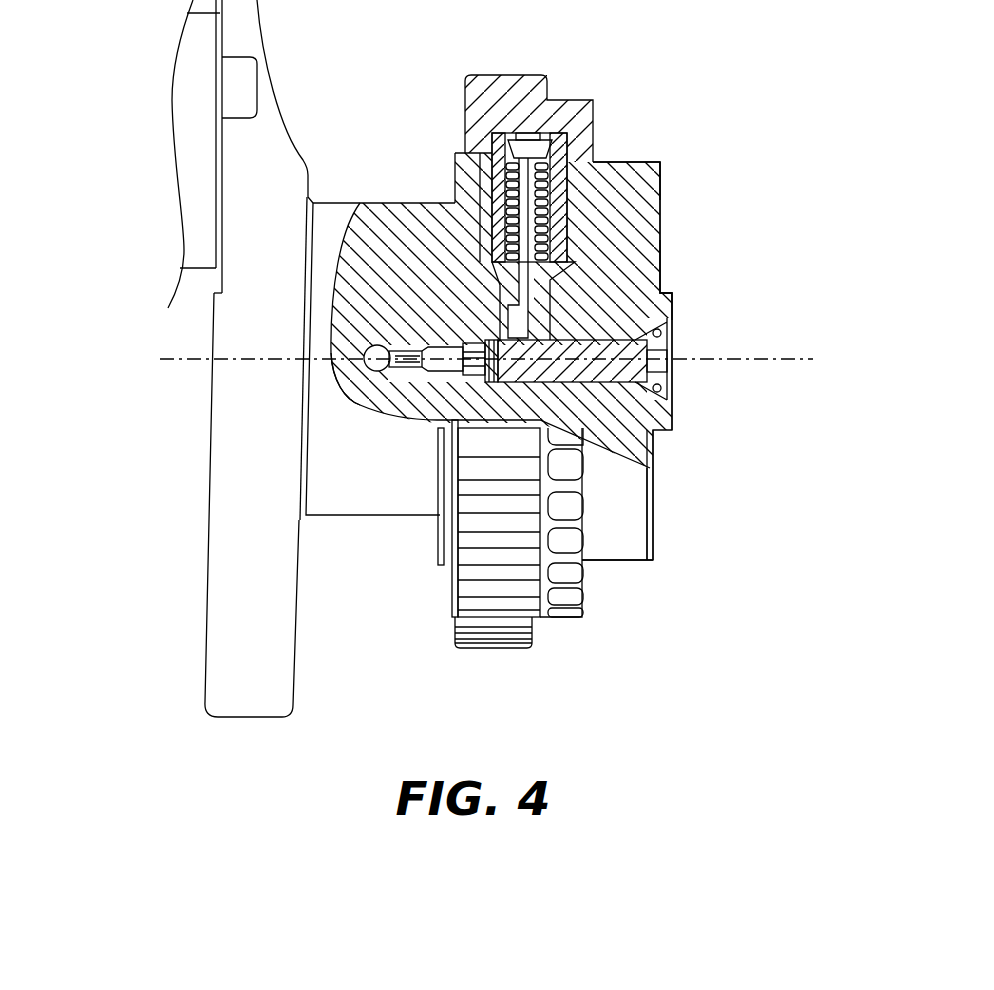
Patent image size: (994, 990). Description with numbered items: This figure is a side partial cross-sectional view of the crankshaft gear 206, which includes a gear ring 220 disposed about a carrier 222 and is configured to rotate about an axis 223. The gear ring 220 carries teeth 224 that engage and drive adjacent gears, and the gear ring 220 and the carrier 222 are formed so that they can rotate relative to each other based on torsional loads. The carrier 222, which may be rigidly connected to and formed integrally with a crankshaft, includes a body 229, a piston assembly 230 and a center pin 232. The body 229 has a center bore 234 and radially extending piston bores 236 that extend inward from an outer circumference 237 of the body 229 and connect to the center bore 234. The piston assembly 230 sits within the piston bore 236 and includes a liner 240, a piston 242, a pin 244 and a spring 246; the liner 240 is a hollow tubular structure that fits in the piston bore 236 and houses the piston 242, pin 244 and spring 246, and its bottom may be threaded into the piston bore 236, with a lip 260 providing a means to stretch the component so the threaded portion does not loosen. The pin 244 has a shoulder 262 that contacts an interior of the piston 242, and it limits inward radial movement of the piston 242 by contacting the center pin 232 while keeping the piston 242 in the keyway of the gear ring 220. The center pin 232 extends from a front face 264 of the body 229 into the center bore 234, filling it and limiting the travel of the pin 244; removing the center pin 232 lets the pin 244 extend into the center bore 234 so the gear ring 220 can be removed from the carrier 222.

The crankshaft gear 206 is at (803, 289).
The gear ring 220 is at (457, 117).
The carrier 222 is at (668, 250).
The axis 223 is at (772, 368).
The teeth 224 is at (495, 622).
The body 229 is at (647, 278).
The piston assembly 230 is at (582, 213).
The center pin 232 is at (613, 382).
The center bore 234 is at (440, 368).
The piston bore 236 is at (547, 322).
The outer circumference 237 is at (463, 150).
The liner 240 is at (470, 250).
The piston 242 is at (507, 130).
The pin 244 is at (487, 302).
The spring 246 is at (455, 200).
The lip 260 is at (660, 172).
The shoulder 262 is at (548, 148).
The front face 264 is at (655, 456).